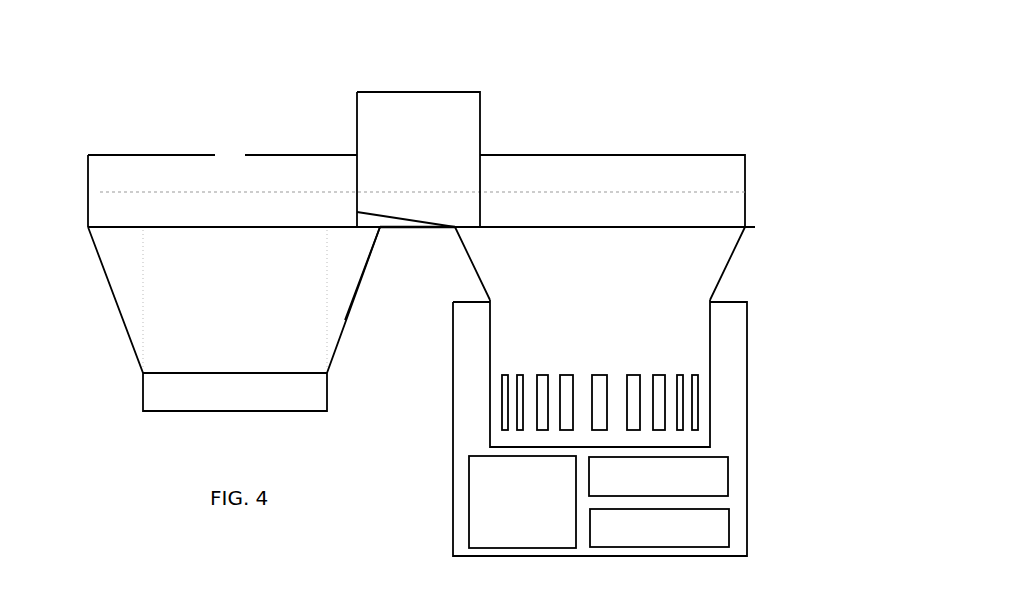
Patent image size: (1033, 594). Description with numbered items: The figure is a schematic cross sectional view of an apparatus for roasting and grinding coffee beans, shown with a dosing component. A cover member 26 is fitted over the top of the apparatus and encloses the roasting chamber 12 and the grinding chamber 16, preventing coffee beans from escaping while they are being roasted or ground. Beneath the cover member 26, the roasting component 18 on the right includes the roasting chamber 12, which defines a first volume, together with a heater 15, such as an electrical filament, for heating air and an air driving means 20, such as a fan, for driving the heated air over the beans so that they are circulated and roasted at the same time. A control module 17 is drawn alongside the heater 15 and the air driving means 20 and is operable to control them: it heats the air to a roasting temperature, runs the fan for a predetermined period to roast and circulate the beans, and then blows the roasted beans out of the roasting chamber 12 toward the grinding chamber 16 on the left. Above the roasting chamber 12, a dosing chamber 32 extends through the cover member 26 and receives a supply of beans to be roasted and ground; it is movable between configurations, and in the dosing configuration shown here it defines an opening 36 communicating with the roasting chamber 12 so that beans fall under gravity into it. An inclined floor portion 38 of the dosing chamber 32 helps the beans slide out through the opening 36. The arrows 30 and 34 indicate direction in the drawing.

The roasting chamber 12 is at (702, 245).
The heater 15 is at (729, 530).
The grinding chamber 16 is at (165, 265).
The control module 17 is at (469, 492).
The roasting component 18 is at (693, 125).
The air driving means 20 is at (728, 478).
The cover member 26 is at (107, 155).
The direction of flow 30 is at (493, 110).
The dosing chamber 32 is at (357, 106).
The opening 34 is at (403, 105).
The opening 36 is at (474, 240).
The inclined floor portion 38 is at (398, 218).